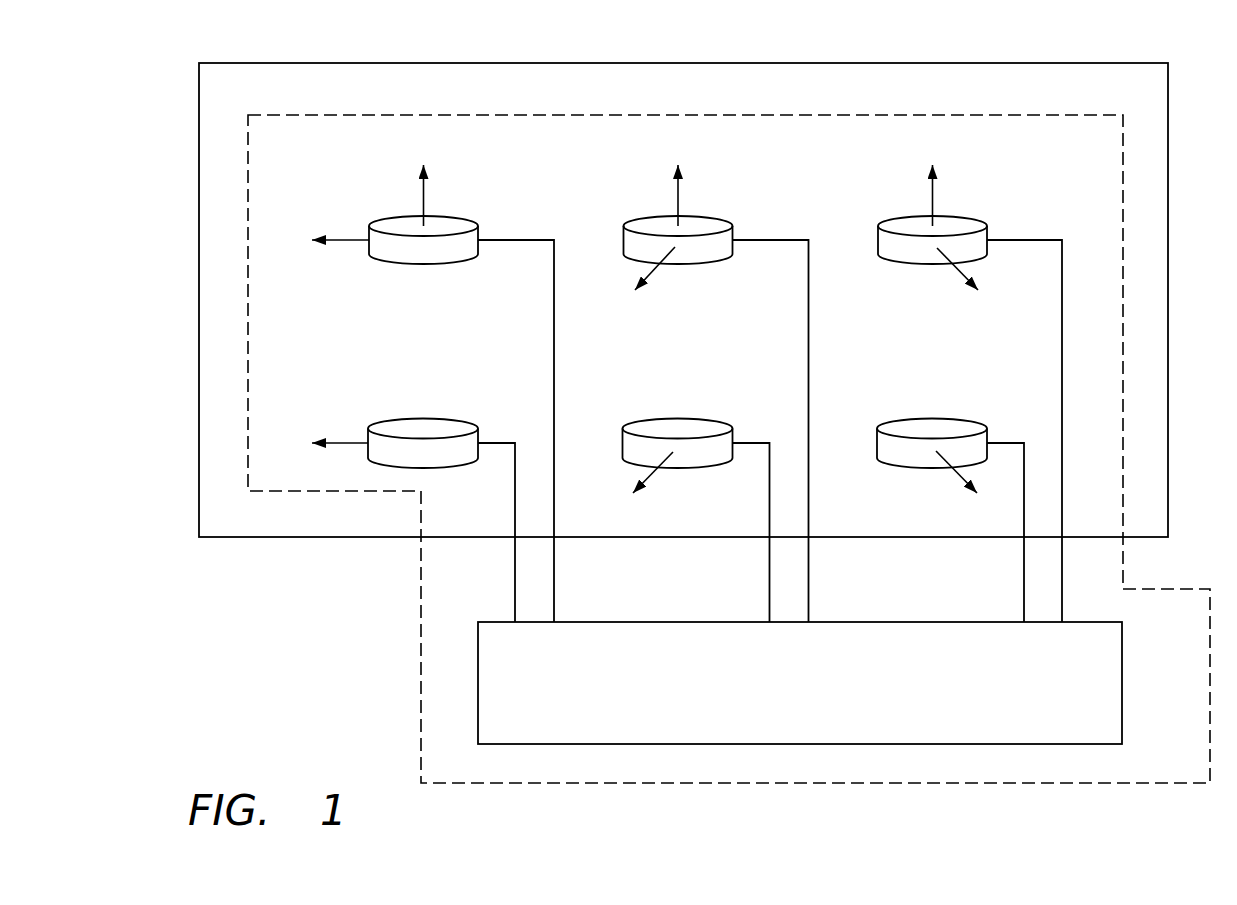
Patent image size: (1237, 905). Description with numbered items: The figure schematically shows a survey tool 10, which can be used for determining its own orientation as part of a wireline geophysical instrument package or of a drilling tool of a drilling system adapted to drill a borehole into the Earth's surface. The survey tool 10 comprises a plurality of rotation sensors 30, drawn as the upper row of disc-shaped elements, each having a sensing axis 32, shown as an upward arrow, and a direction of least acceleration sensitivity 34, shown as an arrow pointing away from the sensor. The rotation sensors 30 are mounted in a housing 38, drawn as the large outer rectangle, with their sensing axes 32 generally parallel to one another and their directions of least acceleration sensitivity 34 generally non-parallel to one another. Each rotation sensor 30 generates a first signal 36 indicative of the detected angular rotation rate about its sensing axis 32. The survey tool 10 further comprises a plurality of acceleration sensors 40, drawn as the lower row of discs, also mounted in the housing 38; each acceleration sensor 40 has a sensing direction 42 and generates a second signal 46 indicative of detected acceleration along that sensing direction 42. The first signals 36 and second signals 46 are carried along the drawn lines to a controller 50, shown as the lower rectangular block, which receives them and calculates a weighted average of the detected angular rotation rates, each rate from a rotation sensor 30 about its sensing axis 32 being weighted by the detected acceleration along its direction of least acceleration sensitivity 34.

The survey tool 10 is at (1022, 115).
The rotation sensor 30 is at (467, 216).
The sensing axis 32 is at (427, 197).
The direction of least acceleration sensitivity 34 is at (348, 240).
The first signal 36 is at (555, 592).
The housing 38 is at (1168, 148).
The acceleration sensor 40 is at (465, 420).
The sensing direction 42 is at (348, 443).
The second signal 46 is at (514, 592).
The controller 50 is at (1122, 683).